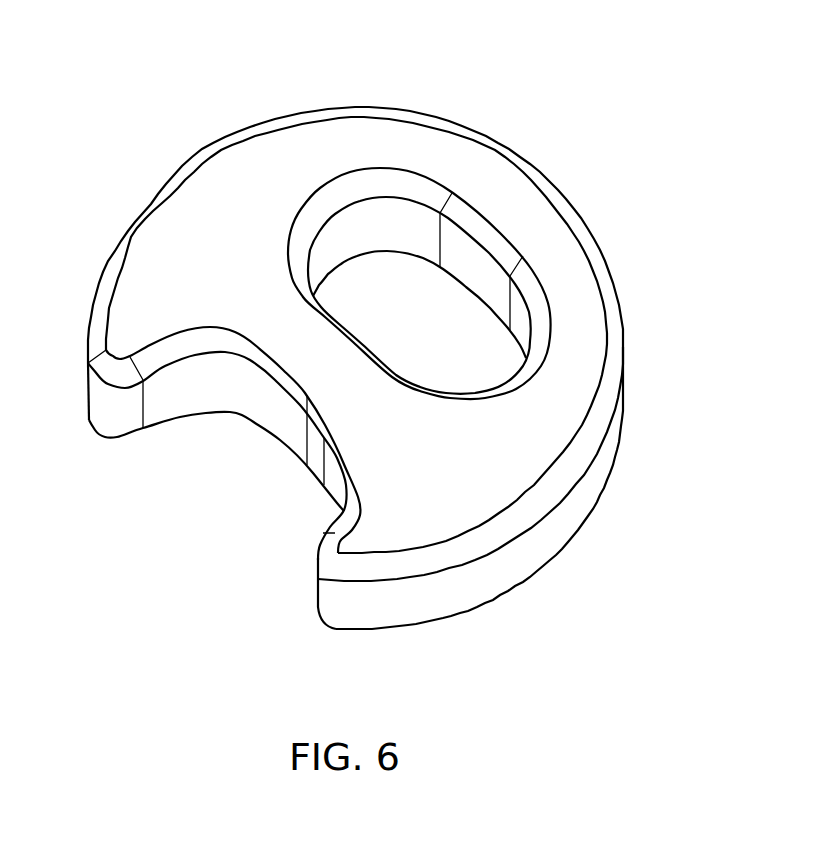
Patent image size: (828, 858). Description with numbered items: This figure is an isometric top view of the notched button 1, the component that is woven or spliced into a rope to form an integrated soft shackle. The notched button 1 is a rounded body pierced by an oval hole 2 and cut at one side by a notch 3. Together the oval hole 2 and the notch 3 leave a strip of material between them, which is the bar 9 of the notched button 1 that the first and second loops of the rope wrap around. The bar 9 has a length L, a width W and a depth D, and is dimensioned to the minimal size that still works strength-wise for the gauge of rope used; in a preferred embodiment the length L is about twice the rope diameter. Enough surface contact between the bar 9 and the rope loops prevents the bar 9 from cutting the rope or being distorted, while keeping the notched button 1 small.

The notched button 1 is at (372, 332).
The oval hole 2 is at (450, 307).
The notch 3 is at (224, 446).
The bar of the notched button 9 is at (307, 463).